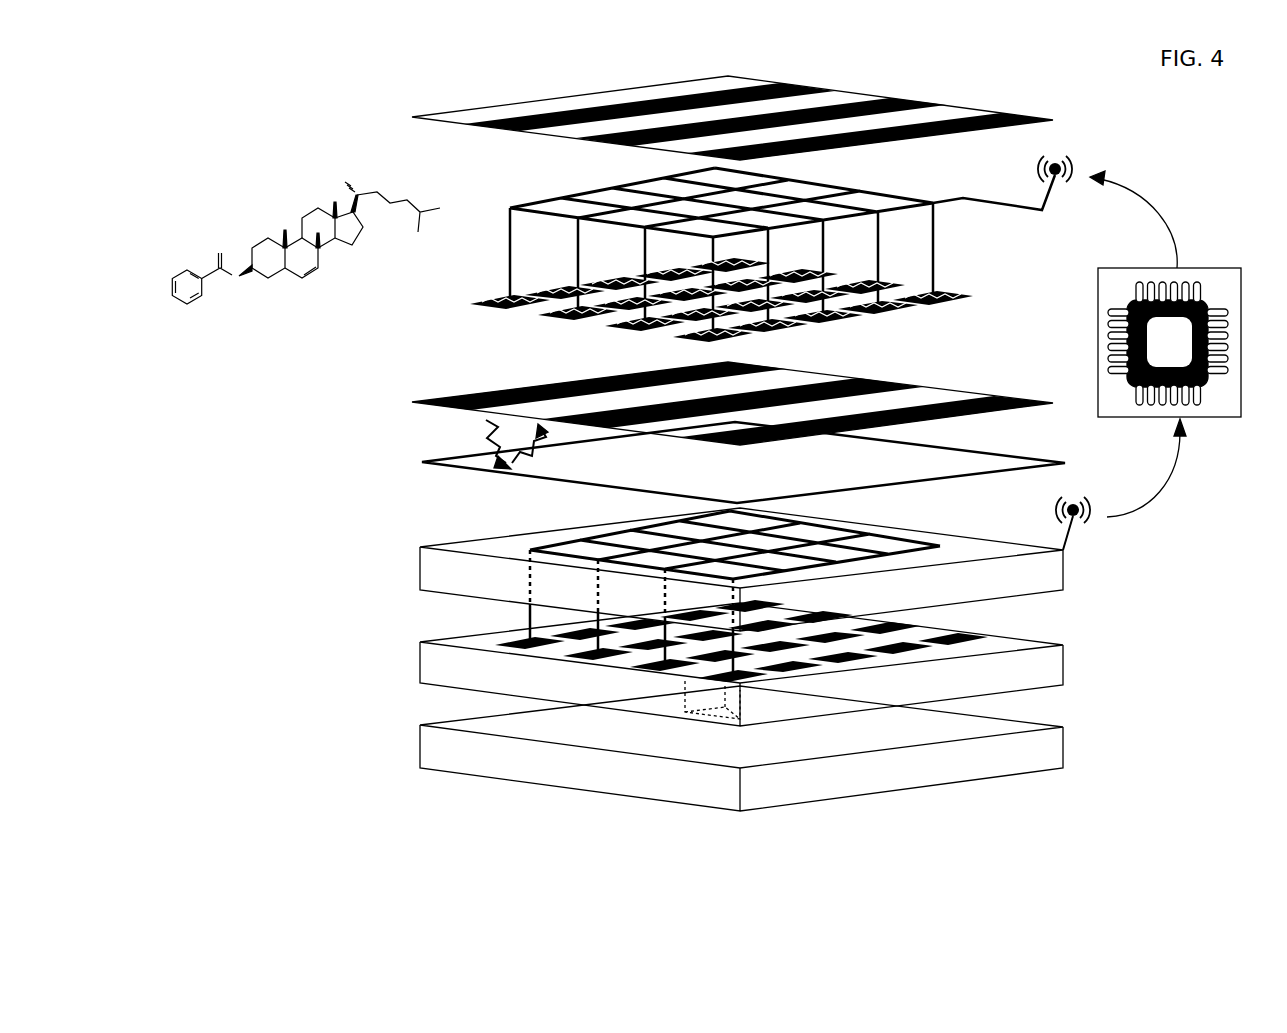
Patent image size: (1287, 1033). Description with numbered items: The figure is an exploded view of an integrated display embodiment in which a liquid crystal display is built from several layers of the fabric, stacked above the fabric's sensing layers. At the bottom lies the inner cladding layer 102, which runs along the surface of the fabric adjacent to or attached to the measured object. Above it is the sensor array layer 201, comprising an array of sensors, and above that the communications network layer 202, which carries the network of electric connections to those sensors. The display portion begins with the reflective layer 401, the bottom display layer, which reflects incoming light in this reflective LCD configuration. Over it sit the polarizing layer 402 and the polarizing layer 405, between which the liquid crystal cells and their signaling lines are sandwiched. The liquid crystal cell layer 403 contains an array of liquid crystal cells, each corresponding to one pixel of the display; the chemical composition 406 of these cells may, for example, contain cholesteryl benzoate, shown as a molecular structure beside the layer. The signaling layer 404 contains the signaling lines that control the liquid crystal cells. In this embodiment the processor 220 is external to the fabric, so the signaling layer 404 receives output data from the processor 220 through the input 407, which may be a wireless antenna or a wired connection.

The polarizing layer 405 is at (465, 118).
The signaling layer 404 is at (590, 192).
The liquid crystal cell layer 403 is at (565, 320).
The chemical composition 406 is at (264, 227).
The polarizing layer 402 is at (440, 397).
The reflective layer 401 is at (457, 459).
The communications network layer 202 is at (428, 571).
The sensor array layer 201 is at (433, 658).
The inner cladding layer 102 is at (440, 749).
The input 407 is at (1092, 152).
The processor 220 is at (1208, 268).